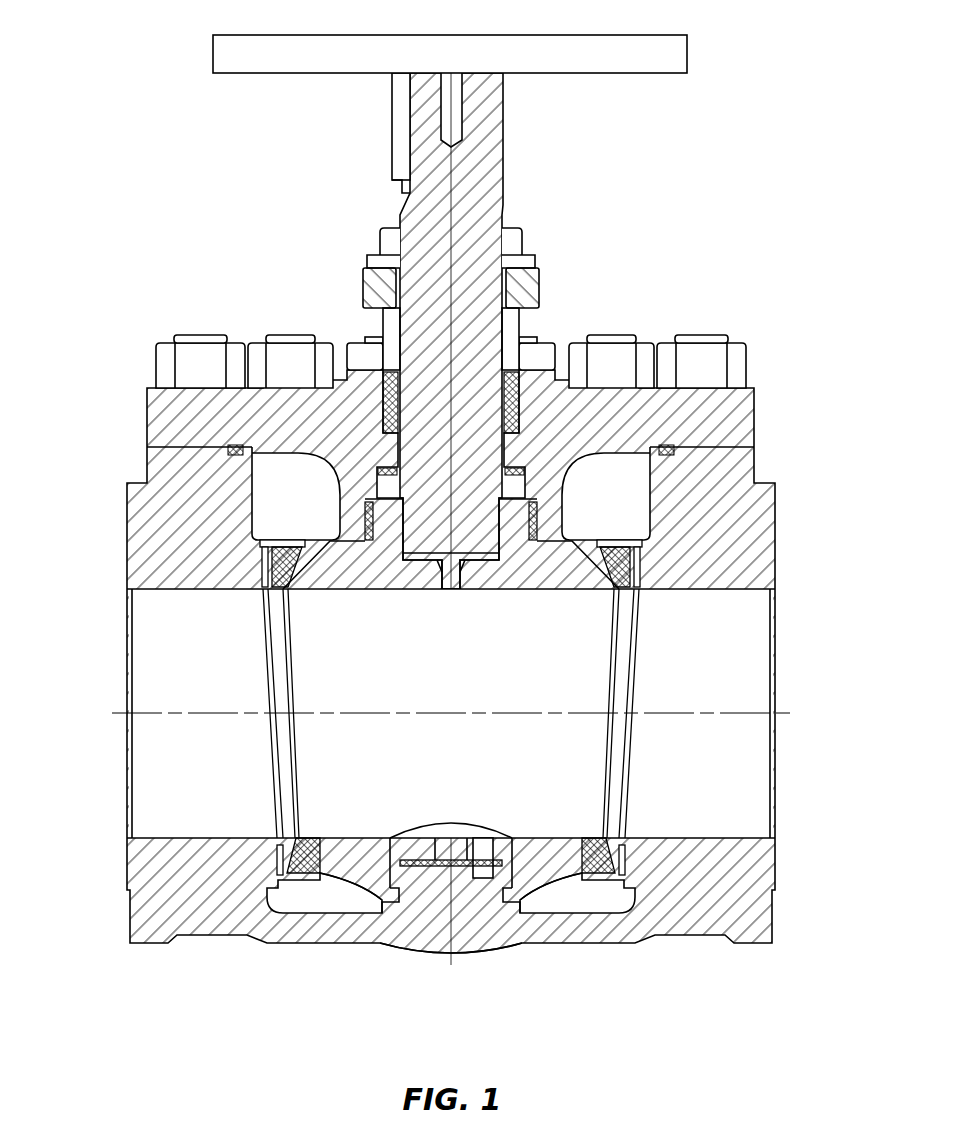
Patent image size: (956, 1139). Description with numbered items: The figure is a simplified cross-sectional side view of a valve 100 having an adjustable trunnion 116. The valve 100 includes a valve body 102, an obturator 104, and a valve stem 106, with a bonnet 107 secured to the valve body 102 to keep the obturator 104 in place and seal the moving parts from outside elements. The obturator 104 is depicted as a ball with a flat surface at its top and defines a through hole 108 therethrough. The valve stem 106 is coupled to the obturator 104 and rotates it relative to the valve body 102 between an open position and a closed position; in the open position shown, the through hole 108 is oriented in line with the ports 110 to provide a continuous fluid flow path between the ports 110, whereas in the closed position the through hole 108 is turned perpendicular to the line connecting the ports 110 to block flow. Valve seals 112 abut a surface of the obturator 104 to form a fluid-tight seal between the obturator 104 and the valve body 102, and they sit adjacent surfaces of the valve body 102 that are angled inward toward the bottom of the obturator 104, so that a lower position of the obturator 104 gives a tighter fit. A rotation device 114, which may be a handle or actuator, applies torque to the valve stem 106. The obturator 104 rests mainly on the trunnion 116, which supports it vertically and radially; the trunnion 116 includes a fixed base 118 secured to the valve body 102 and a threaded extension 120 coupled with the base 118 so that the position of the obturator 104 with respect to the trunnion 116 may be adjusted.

The valve 100 is at (163, 71).
The valve body 102 is at (748, 530).
The obturator 104 is at (539, 877).
The valve stem 106 is at (485, 135).
The bonnet 107 is at (740, 420).
The through hole 108 is at (575, 778).
The ports 110 is at (775, 693).
The valve seals 112 is at (623, 590).
The rotation device 114 is at (667, 57).
The trunnion 116 is at (482, 956).
The base 118 is at (436, 887).
The extension 120 is at (392, 878).